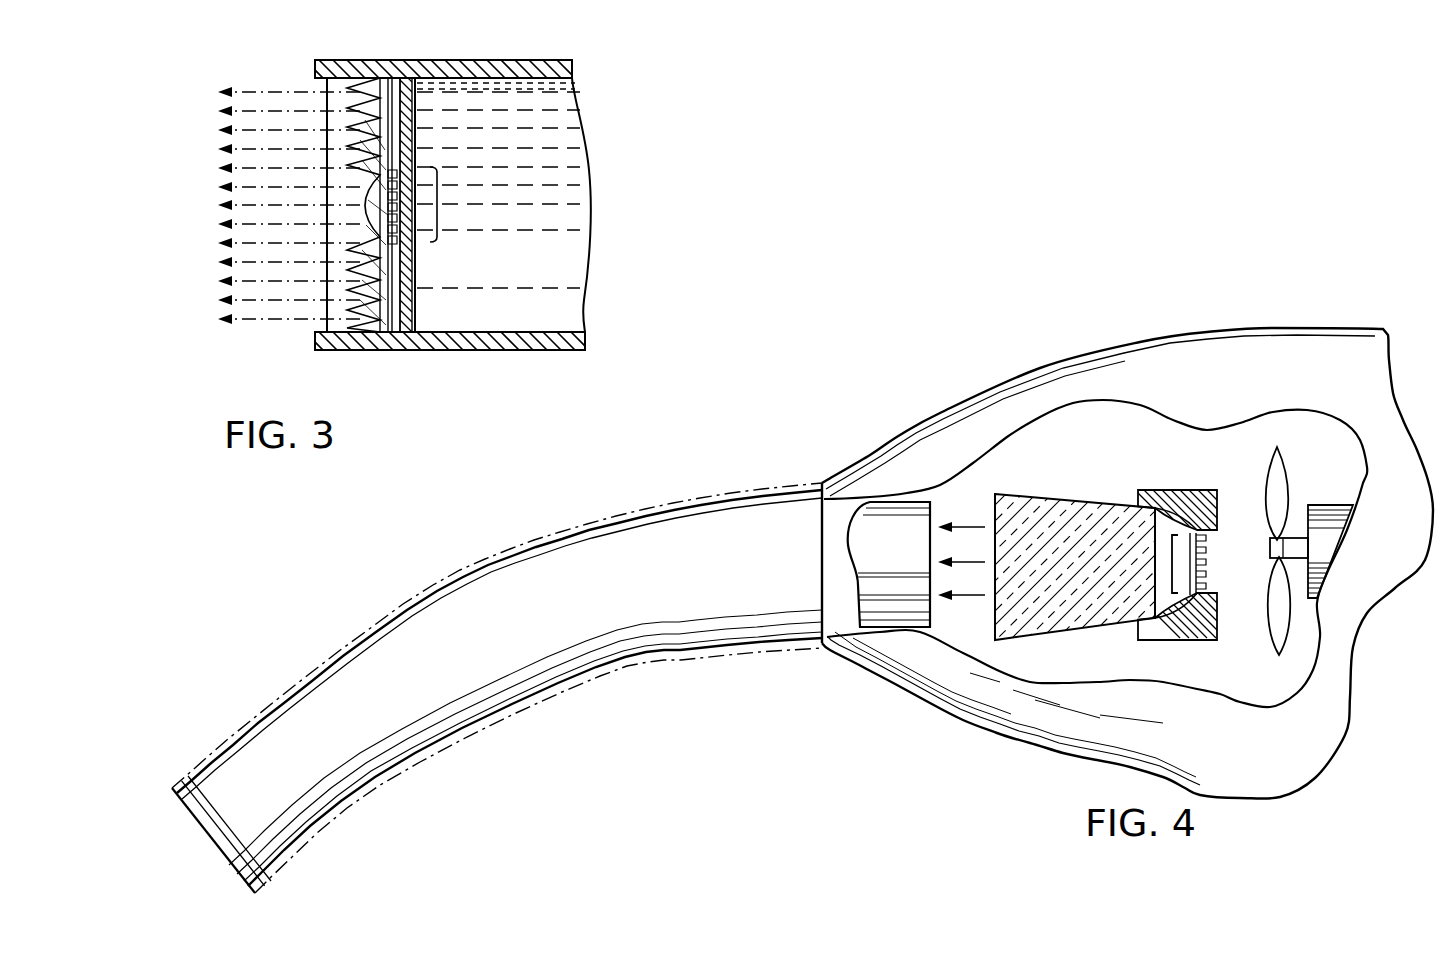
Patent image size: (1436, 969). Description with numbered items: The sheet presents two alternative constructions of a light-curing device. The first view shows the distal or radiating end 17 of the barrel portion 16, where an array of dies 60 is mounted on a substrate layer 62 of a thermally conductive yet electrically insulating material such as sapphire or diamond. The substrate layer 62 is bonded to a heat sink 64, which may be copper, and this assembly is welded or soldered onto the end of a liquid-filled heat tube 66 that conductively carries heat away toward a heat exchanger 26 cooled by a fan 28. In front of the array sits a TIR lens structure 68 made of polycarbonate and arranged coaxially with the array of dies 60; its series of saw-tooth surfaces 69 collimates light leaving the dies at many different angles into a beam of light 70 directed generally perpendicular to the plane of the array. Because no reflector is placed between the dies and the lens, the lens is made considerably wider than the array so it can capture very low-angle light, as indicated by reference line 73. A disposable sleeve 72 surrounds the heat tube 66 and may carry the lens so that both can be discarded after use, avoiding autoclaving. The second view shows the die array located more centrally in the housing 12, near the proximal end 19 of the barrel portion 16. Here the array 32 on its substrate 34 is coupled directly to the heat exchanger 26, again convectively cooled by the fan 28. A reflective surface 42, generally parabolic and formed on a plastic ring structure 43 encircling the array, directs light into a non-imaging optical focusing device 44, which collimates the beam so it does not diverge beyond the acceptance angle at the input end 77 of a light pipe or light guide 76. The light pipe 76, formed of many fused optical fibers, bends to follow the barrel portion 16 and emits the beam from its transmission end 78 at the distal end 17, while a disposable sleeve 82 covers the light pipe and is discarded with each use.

In FIG. 4, the housing 12 is at (1290, 303).
In FIG. 4, the barrel portion 16 is at (828, 431).
In FIG. 4, the distal or radiating end 17 is at (177, 722).
In FIG. 4, the proximal end 19 is at (946, 626).
In FIG. 4, the heat exchanger 26 is at (1218, 546).
In FIG. 4, the fan 28 is at (1300, 488).
In FIG. 4, the array 32 is at (1083, 515).
In FIG. 4, the substrate 34 is at (1193, 540).
In FIG. 4, the reflective surface 42 is at (1145, 605).
In FIG. 4, the plastic ring structure 43 is at (1180, 528).
In FIG. 4, the non-imaging optical focusing device 44 is at (1172, 568).
In FIG. 3, the array of dies 60 is at (438, 203).
In FIG. 3, the substrate layer 62 is at (413, 143).
In FIG. 3, the heat sink 64 is at (413, 272).
In FIG. 3, the liquid-filled heat tube 66 is at (560, 325).
In FIG. 3, the TIR lens structure 68 is at (377, 78).
In FIG. 3, the saw-tooth surfaces 69 is at (363, 333).
In FIG. 3, the beam of light 70 is at (270, 92).
In FIG. 3, the disposable sleeve 72 is at (515, 343).
In FIG. 3, the low angle light reference line 73 is at (375, 278).
In FIG. 4, the light pipe or light guide 76 is at (512, 565).
In FIG. 4, the input end 77 is at (888, 533).
In FIG. 4, the transmission end 78 is at (267, 797).
In FIG. 4, the disposable sleeve 82 is at (433, 592).